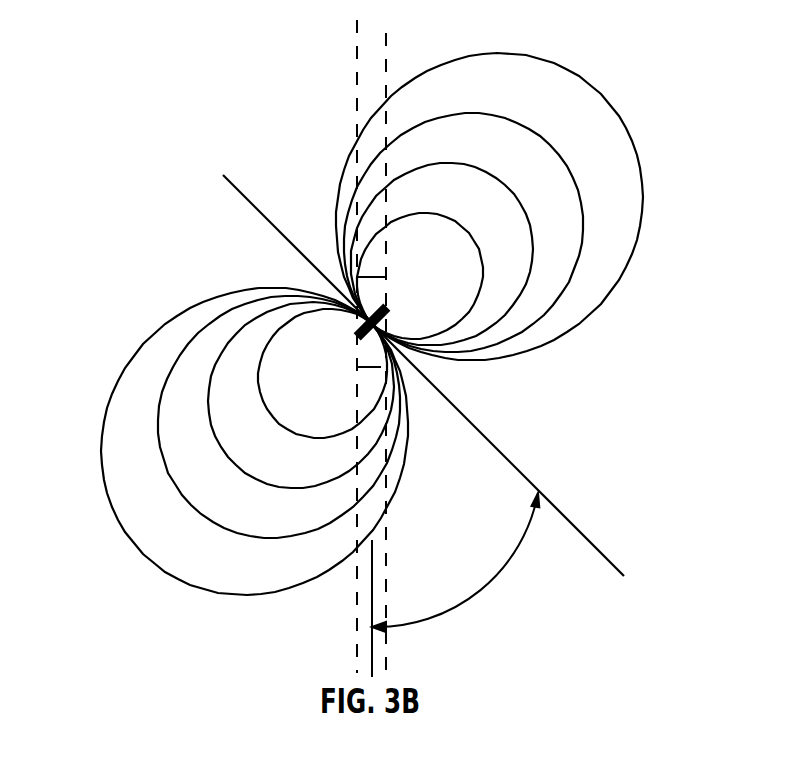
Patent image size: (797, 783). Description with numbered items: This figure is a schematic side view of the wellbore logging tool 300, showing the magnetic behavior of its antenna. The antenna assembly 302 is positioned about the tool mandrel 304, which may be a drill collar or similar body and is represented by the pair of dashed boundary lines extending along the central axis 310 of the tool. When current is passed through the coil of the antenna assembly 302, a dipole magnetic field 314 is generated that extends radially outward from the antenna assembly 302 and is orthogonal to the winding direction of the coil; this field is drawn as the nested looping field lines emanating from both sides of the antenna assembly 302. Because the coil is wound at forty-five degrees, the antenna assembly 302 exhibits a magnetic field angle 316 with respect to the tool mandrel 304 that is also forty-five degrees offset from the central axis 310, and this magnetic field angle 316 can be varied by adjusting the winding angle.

The wellbore logging tool 300 is at (464, 387).
The antenna assembly 302 is at (402, 300).
The tool mandrel 304 is at (357, 103).
The central axis 310 is at (370, 647).
The dipole magnetic field 314 is at (642, 167).
The magnetic field angle 316 is at (495, 580).